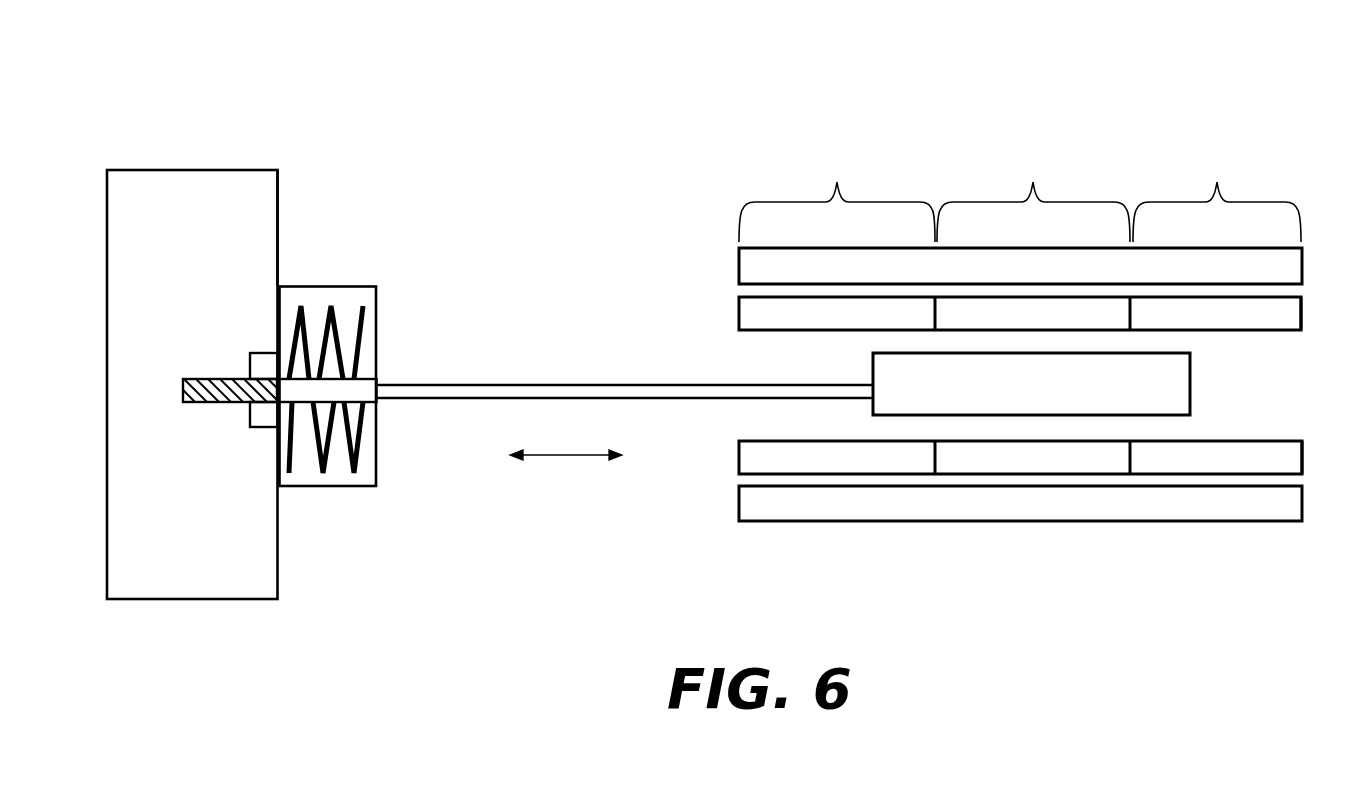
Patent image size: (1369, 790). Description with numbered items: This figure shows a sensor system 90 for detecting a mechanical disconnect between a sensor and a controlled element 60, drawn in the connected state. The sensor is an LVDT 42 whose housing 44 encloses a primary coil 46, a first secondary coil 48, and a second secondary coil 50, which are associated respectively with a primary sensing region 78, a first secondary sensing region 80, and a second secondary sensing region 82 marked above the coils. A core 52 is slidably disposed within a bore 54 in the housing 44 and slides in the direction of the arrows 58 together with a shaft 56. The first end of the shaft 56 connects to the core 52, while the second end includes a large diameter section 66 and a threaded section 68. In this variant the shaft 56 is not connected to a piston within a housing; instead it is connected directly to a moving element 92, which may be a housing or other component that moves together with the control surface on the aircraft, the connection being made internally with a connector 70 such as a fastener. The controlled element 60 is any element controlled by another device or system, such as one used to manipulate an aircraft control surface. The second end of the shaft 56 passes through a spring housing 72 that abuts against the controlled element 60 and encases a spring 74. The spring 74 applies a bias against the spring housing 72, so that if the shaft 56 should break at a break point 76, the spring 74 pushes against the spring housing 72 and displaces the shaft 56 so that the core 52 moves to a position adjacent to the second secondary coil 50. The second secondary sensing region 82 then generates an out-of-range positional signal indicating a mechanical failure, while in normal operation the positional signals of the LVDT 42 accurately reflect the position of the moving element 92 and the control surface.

The LVDT 42 is at (740, 275).
The housing 44 is at (1013, 503).
The primary coil 46 is at (978, 322).
The first secondary coil 48 is at (740, 316).
The second secondary coil 50 is at (1265, 320).
The core 52 is at (1158, 387).
The bore 54 is at (702, 353).
The shaft 56 is at (640, 383).
The arrows 58 is at (563, 457).
The controlled element 60 is at (148, 170).
The large diameter section 66 is at (303, 394).
The threaded section 68 is at (183, 402).
The connector 70 is at (250, 427).
The spring housing 72 is at (321, 286).
The spring 74 is at (348, 470).
The break point 76 is at (265, 393).
The primary sensing region 78 is at (1033, 196).
The first secondary sensing region 80 is at (837, 197).
The second secondary sensing region 82 is at (1217, 197).
The sensor system 90 is at (429, 70).
The moving element 92 is at (278, 170).